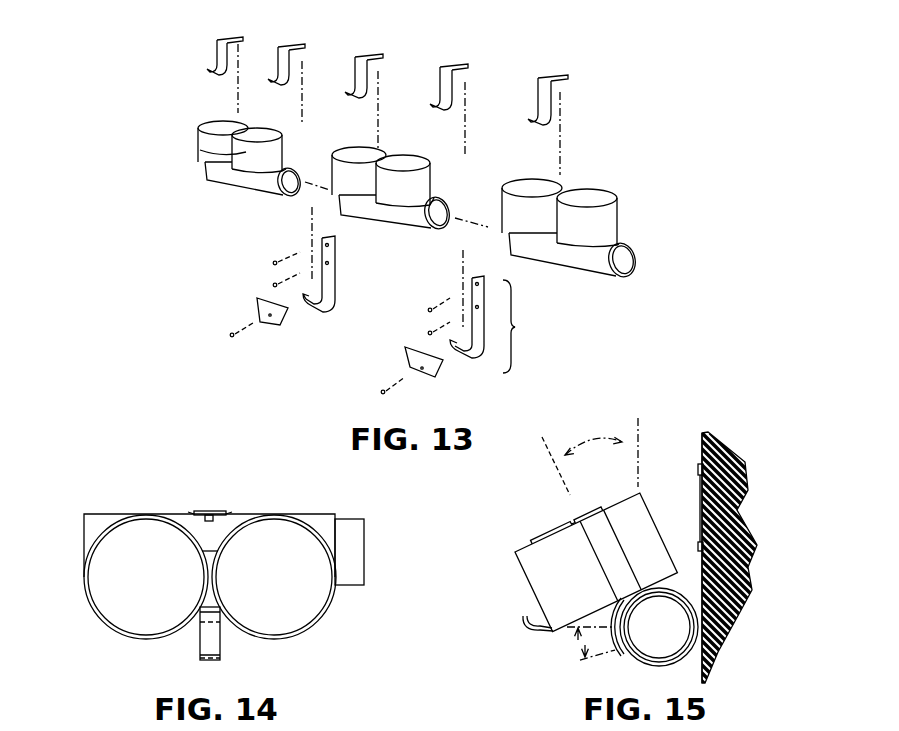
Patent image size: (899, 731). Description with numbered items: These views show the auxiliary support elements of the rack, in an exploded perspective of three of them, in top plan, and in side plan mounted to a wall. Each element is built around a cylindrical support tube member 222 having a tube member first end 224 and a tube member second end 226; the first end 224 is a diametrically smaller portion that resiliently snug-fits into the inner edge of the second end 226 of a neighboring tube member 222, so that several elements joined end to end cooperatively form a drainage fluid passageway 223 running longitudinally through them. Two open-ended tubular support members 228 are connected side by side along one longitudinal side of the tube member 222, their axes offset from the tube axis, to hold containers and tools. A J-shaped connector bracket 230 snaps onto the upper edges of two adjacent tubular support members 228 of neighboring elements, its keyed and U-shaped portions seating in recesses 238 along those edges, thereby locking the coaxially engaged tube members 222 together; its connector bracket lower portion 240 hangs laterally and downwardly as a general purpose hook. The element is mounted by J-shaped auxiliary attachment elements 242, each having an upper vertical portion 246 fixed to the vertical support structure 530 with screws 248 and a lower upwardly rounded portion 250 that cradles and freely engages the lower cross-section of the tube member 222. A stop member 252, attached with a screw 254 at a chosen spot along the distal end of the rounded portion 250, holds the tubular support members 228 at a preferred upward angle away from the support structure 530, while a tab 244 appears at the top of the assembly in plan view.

In FIG. 13, the cylindrical support tube member 222 is at (207, 164).
In FIG. 13, the drainage fluid passageway 223 is at (796, 10).
In FIG. 15, the drainage fluid passageway 223 is at (695, 620).
In FIG. 13, the tube member first end 224 is at (287, 197).
In FIG. 14, the tube member first end 224 is at (348, 532).
In FIG. 13, the tube member second end 226 is at (210, 168).
In FIG. 14, the tube member second end 226 is at (93, 522).
In FIG. 13, the tubular support member 228 is at (218, 123).
In FIG. 14, the tubular support member 228 is at (329, 621).
In FIG. 15, the tubular support member 228 is at (623, 517).
In FIG. 13, the J-shaped connector bracket 230 is at (215, 45).
In FIG. 14, the J-shaped connector bracket 230 is at (230, 658).
In FIG. 15, the J-shaped connector bracket 230 is at (555, 527).
In FIG. 13, the recess 238 is at (212, 128).
In FIG. 14, the connector bracket lower portion 240 is at (213, 645).
In FIG. 13, the auxiliary attachment element 242 is at (393, 291).
In FIG. 15, the auxiliary attachment element 242 is at (697, 502).
In FIG. 14, the top clip 244 is at (231, 508).
In FIG. 13, the upper vertical portion 246 is at (336, 249).
In FIG. 14, the upper vertical portion 246 is at (195, 513).
In FIG. 15, the upper vertical portion 246 is at (740, 530).
In FIG. 14, the screw 248 is at (208, 512).
In FIG. 15, the screw 248 is at (701, 463).
In FIG. 13, the lower upwardly rounded portion 250 is at (318, 310).
In FIG. 13, the stop member 252 is at (253, 303).
In FIG. 13, the screw 254 is at (230, 335).
In FIG. 15, the vertical support structure 530 is at (724, 470).